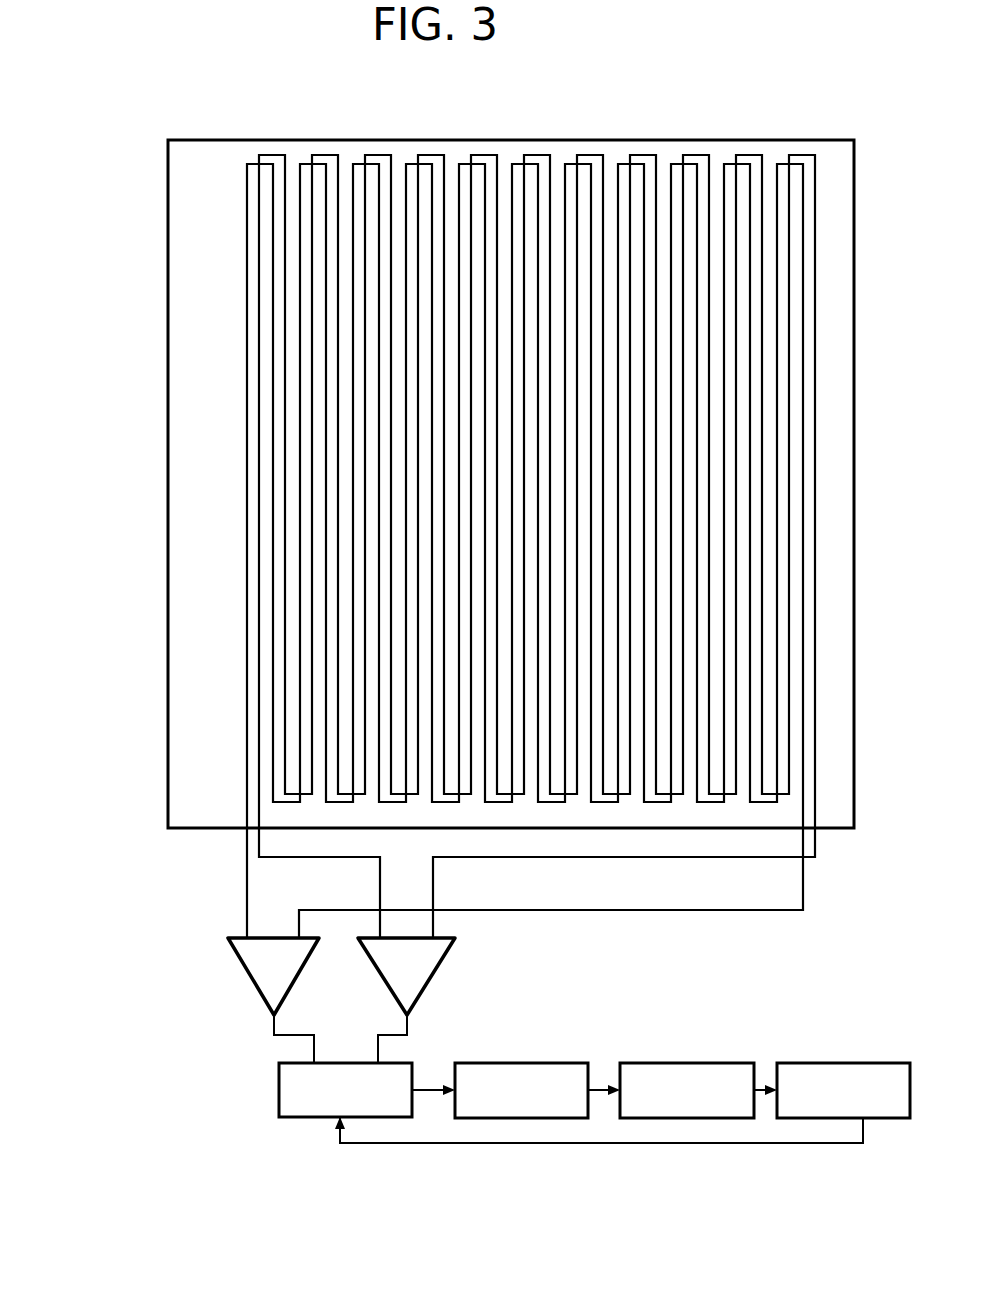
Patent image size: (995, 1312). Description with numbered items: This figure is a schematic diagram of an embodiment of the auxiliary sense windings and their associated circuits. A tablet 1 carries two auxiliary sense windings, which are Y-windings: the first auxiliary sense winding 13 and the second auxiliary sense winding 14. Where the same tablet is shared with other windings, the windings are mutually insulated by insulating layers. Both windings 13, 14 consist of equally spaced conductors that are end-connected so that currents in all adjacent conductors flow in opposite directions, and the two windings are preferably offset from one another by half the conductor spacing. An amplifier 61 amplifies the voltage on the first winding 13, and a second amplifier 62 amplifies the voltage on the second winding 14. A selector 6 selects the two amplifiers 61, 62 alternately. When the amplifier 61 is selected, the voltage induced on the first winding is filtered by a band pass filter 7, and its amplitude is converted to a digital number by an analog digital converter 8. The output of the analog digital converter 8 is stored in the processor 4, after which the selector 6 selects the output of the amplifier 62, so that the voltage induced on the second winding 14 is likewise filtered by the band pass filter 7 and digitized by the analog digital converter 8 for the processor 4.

The tablet 1 is at (268, 140).
The No. 1 winding 13 is at (247, 463).
The No. 2 winding 14 is at (259, 603).
The amplifier 61 is at (245, 968).
The amplifier 62 is at (437, 968).
The selector 6 is at (278, 1078).
The band pass filter 7 is at (505, 1063).
The analog digital converter 8 is at (672, 1063).
The processor 4 is at (845, 1063).